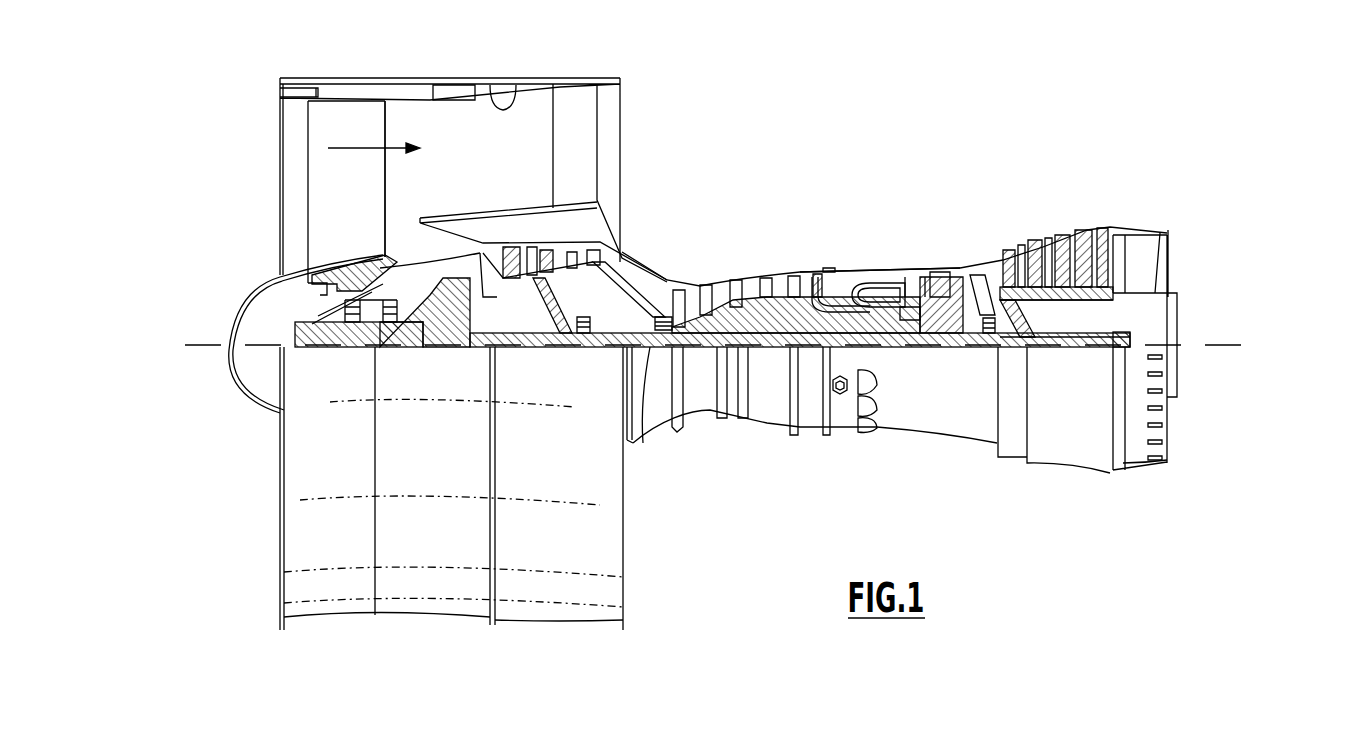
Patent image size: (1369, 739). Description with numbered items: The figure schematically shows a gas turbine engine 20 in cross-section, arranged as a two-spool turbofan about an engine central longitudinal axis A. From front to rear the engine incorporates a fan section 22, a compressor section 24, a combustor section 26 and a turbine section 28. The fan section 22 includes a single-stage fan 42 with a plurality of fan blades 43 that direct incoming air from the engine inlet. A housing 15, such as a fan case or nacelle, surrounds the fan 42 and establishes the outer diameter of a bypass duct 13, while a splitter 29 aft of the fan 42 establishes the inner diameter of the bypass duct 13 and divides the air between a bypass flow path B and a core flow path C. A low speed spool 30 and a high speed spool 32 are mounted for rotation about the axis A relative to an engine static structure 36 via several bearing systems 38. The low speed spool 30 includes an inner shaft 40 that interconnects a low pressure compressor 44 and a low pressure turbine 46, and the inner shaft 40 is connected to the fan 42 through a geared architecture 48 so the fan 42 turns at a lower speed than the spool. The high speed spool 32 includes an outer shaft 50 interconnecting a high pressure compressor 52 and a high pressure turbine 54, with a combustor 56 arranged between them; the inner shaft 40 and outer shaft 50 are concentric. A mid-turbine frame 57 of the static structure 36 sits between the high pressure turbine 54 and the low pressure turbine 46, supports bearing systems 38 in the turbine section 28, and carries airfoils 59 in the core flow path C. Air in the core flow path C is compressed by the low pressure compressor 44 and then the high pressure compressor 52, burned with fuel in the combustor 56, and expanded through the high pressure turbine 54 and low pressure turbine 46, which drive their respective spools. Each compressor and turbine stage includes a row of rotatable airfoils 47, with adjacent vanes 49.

The gas turbine engine 20 is at (893, 122).
The fan section 22 is at (384, 64).
The housing 15 is at (455, 80).
The bypass duct 13 is at (505, 100).
The fan 42 is at (330, 201).
The fan blades 43 is at (373, 200).
The splitter 29 is at (432, 216).
The low pressure compressor 44 is at (537, 257).
The rotatable airfoils 47 is at (512, 258).
The vanes 49 is at (530, 255).
The compressor section 24 is at (674, 252).
The high pressure compressor 52 is at (753, 275).
The combustor section 26 is at (880, 240).
The high speed spool 32 is at (810, 282).
The combustor 56 is at (877, 292).
The high pressure turbine 54 is at (958, 270).
The mid-turbine frame 57 is at (988, 248).
The turbine section 28 is at (1022, 206).
The low pressure turbine 46 is at (1058, 233).
The airfoils 59 is at (1010, 318).
The bearing systems 38 is at (580, 337).
The outer shaft 50 is at (889, 348).
The geared architecture 48 is at (457, 330).
The inner shaft 40 is at (640, 355).
The low speed spool 30 is at (770, 365).
The engine static structure 36 is at (809, 440).
The engine central longitudinal axis A is at (1250, 345).
The bypass flow path B is at (358, 146).
The core flow path C is at (440, 245).